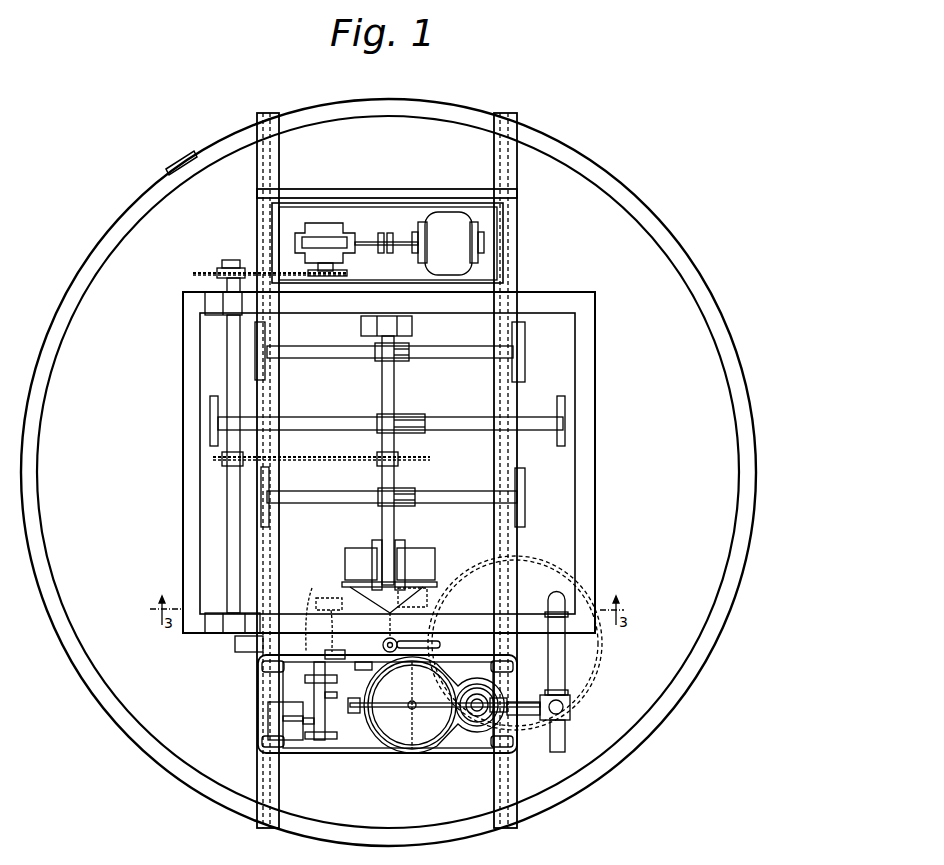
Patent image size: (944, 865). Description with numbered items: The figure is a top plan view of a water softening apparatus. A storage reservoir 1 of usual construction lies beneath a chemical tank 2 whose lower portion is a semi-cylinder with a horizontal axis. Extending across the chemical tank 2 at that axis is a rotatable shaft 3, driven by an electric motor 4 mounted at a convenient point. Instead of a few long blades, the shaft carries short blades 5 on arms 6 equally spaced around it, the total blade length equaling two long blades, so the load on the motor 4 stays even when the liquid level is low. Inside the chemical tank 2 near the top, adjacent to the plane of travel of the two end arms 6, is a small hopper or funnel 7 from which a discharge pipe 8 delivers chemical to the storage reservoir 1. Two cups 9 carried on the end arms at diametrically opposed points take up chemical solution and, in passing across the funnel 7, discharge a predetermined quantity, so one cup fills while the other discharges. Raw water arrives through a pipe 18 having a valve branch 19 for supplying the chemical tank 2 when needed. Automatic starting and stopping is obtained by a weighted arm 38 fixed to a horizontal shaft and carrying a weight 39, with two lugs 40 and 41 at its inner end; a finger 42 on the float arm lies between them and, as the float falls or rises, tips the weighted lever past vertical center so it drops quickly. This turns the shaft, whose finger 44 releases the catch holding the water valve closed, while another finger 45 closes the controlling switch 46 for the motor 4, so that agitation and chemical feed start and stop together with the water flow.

The storage reservoir 1 is at (741, 527).
The chemical tank 2 is at (588, 528).
The rotatable shaft 3 is at (394, 385).
The electric motor 4 is at (442, 222).
The short blades 5 is at (523, 369).
The arms 6 is at (458, 424).
The hopper or funnel 7 is at (437, 600).
The discharge pipe 8 is at (440, 645).
The cups 9 is at (357, 557).
The raw water pipe 18 is at (559, 733).
The valve branch 19 is at (560, 661).
The weighted arm 38 is at (316, 600).
The weight 39 is at (245, 652).
The lug 40 is at (312, 612).
The lug 41 is at (336, 656).
The finger 42 is at (324, 623).
The finger 44 is at (337, 695).
The finger 45 is at (333, 717).
The controlling switch 46 is at (295, 734).